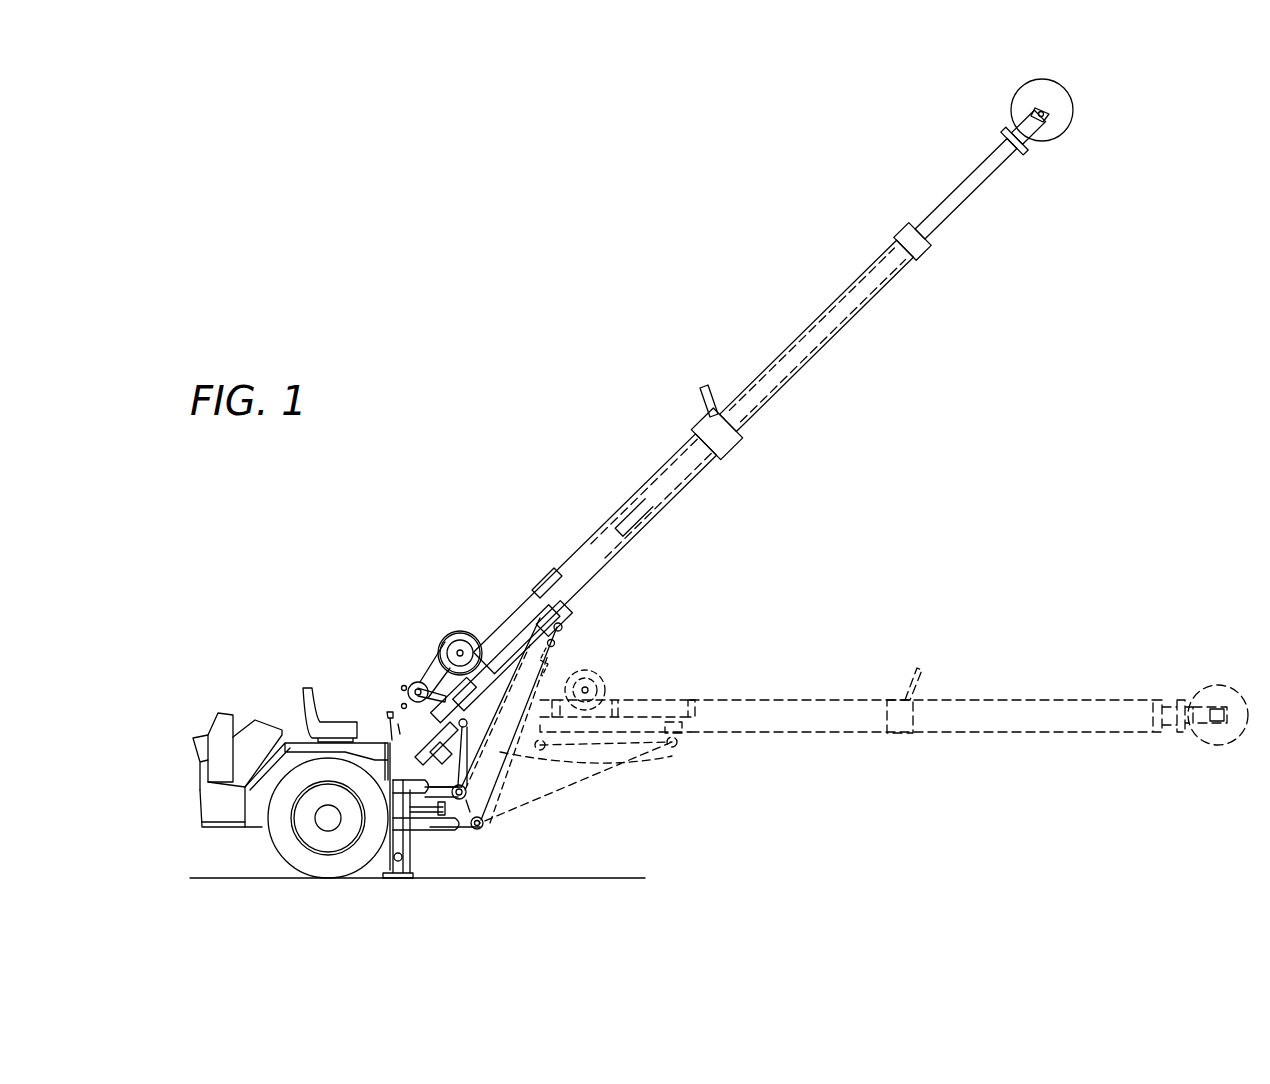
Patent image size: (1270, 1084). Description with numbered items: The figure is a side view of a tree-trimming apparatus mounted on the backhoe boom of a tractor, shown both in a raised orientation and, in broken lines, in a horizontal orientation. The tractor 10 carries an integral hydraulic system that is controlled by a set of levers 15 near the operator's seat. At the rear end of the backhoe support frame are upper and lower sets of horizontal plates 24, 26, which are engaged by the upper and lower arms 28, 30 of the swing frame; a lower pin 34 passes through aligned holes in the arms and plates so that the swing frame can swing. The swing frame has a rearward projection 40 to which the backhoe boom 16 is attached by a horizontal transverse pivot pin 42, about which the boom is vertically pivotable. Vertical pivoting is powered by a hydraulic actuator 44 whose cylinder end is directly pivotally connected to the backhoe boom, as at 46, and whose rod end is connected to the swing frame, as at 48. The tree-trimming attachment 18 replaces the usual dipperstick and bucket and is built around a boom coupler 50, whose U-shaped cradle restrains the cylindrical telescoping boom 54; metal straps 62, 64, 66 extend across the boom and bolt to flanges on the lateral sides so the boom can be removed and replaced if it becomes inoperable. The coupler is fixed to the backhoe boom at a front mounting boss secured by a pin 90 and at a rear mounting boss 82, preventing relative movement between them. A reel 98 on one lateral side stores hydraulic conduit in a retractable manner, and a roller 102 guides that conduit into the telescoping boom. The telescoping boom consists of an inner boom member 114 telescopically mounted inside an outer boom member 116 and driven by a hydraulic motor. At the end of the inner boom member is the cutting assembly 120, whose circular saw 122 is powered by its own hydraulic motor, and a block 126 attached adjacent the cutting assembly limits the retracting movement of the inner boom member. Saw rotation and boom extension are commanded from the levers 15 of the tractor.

The tractor 10 is at (220, 725).
The set of levers 15 is at (378, 718).
The backhoe boom 16 is at (503, 755).
The tree-trimming attachment 18 is at (510, 598).
The upper set of horizontal plates 24 is at (418, 777).
The lower set of horizontal plates 26 is at (412, 840).
The upper arm 28 is at (443, 780).
The lower arm 30 is at (447, 837).
The lower pin 34 is at (425, 833).
The rearward projection 40 is at (458, 820).
The horizontal transverse pivot pin 42 is at (468, 800).
The hydraulic actuator 44 is at (630, 760).
The cylinder end connection 46 is at (558, 643).
The rod end connection 48 is at (490, 825).
The boom coupler 50 is at (590, 672).
The telescoping boom 54 is at (650, 452).
The metal strap 62 is at (548, 583).
The metal strap 64 is at (485, 645).
The metal strap 66 is at (440, 672).
The rear mounting boss 82 is at (568, 605).
The pin 90 is at (564, 627).
The reel 98 is at (448, 640).
The roller 102 is at (418, 686).
The inner boom member 114 is at (935, 195).
The outer boom member 116 is at (860, 330).
The cutting assembly 120 is at (1096, 100).
The circular saw 122 is at (1055, 132).
The block 126 is at (1025, 158).